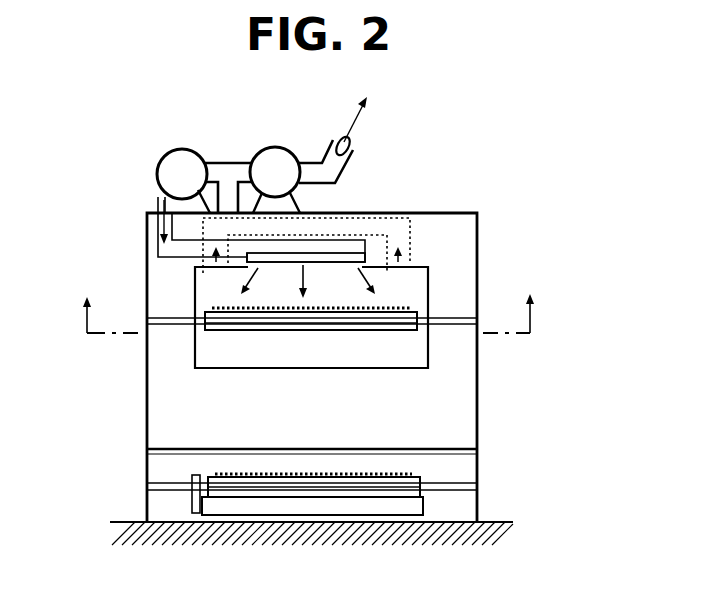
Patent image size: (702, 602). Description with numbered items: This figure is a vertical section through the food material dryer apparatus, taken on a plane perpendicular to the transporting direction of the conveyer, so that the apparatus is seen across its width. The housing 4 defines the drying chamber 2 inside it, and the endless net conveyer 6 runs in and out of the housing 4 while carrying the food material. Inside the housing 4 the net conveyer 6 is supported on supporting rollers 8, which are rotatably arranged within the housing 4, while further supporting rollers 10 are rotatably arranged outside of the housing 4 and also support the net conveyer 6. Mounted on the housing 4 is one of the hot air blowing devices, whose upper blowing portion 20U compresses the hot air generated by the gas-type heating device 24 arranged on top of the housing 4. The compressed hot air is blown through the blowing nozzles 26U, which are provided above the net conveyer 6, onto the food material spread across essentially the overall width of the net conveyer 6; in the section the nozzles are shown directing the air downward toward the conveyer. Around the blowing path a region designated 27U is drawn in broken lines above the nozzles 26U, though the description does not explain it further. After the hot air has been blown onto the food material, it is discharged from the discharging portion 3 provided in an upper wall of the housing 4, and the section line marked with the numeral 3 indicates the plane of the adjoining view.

The drying chamber 2 is at (432, 400).
The discharging portion 3 is at (307, 301).
The housing 4 is at (140, 401).
The net conveyer 6 is at (403, 304).
The supporting rollers 8 is at (403, 318).
The supporting rollers 10 is at (402, 480).
The upper blowing portion 20U is at (162, 147).
The gas-type heating device 24 is at (207, 150).
The blowing nozzles 26U is at (353, 250).
The upper flow enclosure 27U is at (415, 222).